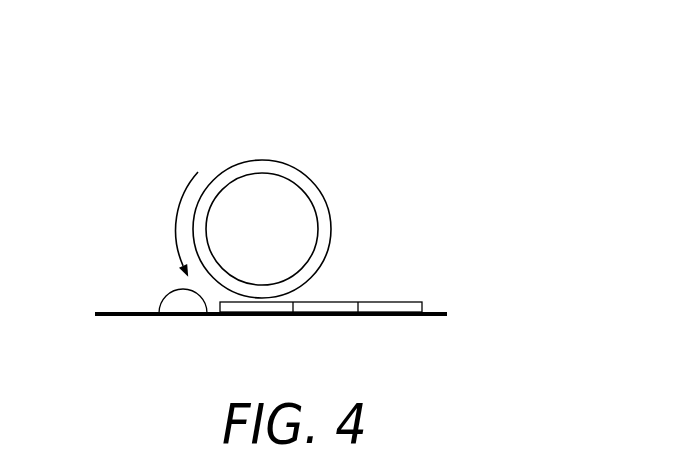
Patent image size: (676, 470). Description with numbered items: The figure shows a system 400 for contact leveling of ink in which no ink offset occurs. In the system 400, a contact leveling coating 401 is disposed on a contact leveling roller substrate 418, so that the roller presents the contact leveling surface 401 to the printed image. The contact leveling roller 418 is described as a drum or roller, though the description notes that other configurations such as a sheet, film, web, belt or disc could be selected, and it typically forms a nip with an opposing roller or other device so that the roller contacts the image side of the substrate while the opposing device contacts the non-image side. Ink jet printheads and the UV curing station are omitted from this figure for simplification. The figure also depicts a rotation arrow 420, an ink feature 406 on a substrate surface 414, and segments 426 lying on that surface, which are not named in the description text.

The system 400 is at (372, 92).
The contact leveling coating 401 is at (328, 204).
The bump 406 is at (168, 295).
The ground surface 414 is at (128, 317).
The contact leveling roller substrate 418 is at (249, 179).
The rotation direction arrow 420 is at (173, 227).
The track segments 426 is at (380, 302).